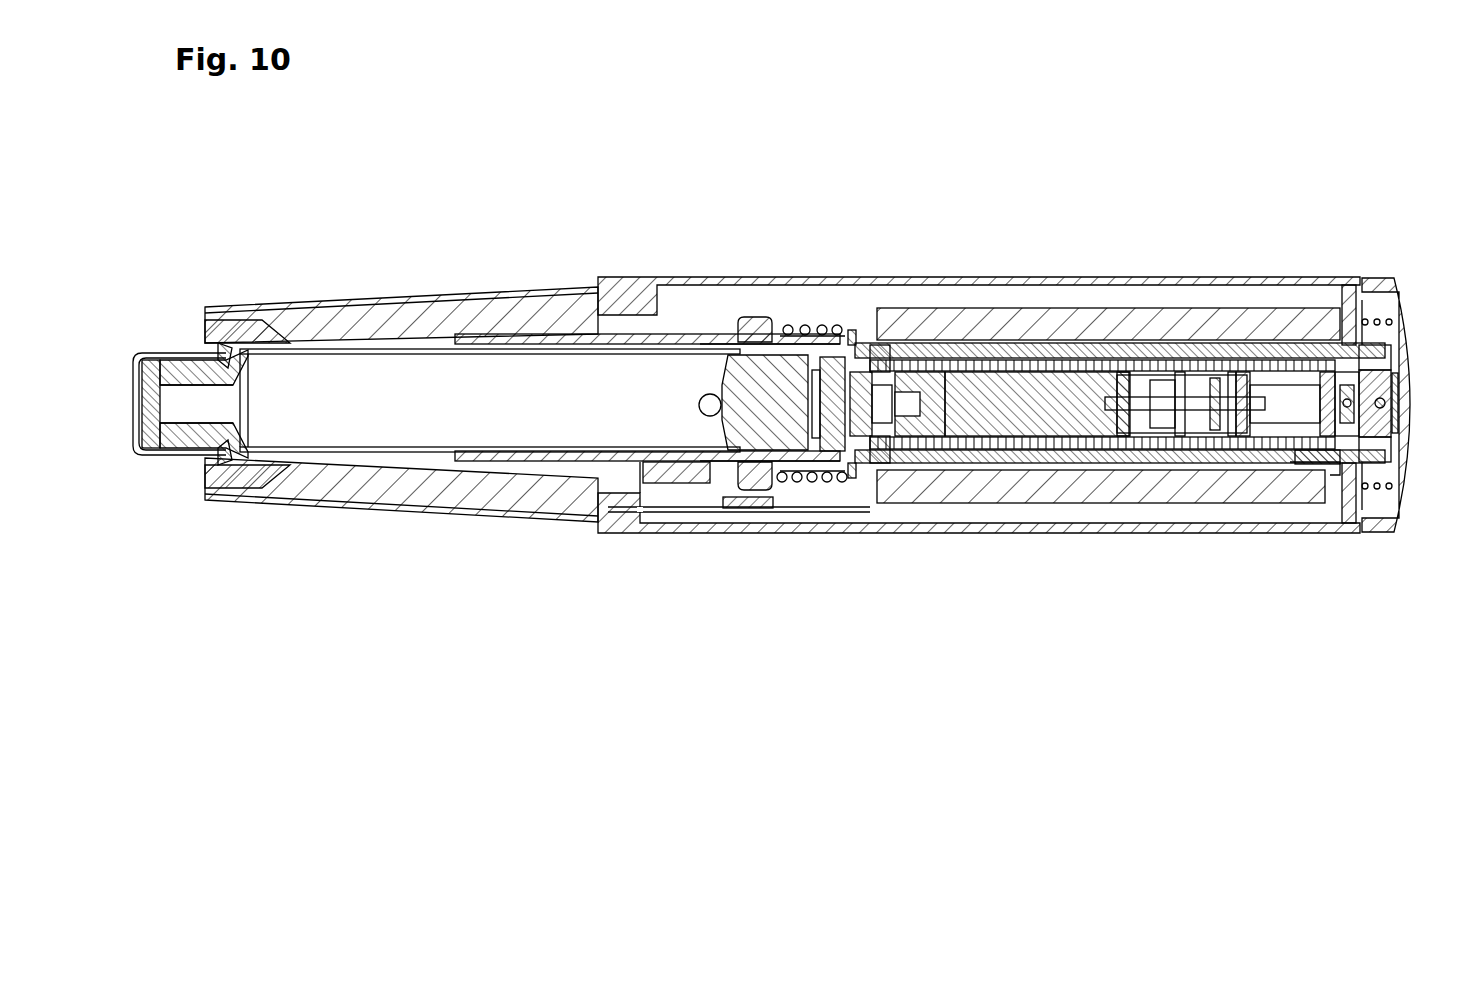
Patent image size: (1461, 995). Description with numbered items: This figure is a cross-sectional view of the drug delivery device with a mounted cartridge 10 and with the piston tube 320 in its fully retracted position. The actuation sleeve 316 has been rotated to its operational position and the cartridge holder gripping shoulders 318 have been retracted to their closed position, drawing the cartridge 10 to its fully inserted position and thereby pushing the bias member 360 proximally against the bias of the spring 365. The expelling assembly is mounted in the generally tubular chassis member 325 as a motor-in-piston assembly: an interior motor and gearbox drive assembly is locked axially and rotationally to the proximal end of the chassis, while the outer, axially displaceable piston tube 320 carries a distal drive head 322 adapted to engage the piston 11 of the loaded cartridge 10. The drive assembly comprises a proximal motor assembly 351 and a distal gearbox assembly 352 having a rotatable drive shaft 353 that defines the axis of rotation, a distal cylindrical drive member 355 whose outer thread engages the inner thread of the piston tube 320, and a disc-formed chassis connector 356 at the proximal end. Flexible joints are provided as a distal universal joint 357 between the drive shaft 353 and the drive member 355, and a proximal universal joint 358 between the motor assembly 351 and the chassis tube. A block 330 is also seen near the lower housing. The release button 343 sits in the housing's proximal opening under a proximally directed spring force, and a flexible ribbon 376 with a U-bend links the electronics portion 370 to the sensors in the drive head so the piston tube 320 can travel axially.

The cartridge 10 is at (467, 420).
The piston 11 is at (766, 433).
The actuation sleeve 316 is at (447, 292).
The cartridge holder gripping shoulders 318 is at (221, 472).
The piston tube 320 is at (942, 375).
The drive head 322 is at (838, 410).
The chassis member 325 is at (1060, 348).
The lower block / trigger 330 is at (698, 497).
The release button 343 is at (1400, 308).
The motor assembly 351 is at (1153, 413).
The gearbox assembly 352 is at (1020, 410).
The drive shaft 353 is at (923, 408).
The drive member 355 is at (878, 362).
The chassis connector 356 is at (1377, 380).
The distal universal joint 357 is at (864, 410).
The proximal universal joint 358 is at (1345, 410).
The bias member 360 is at (742, 316).
The spring 365 is at (795, 322).
The control and communication assembly 370 is at (1108, 485).
The flexible ribbon 376 is at (1328, 457).